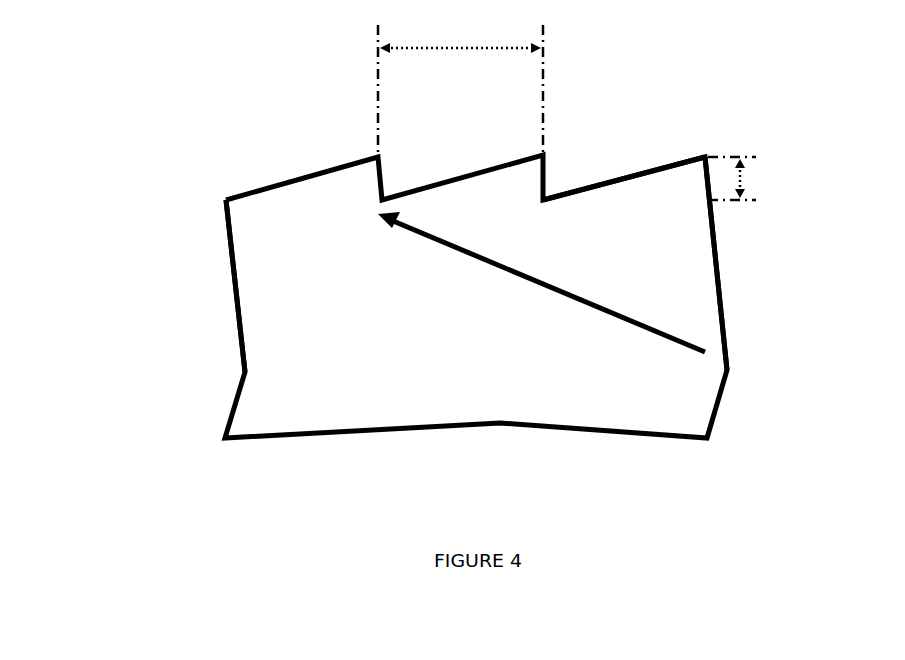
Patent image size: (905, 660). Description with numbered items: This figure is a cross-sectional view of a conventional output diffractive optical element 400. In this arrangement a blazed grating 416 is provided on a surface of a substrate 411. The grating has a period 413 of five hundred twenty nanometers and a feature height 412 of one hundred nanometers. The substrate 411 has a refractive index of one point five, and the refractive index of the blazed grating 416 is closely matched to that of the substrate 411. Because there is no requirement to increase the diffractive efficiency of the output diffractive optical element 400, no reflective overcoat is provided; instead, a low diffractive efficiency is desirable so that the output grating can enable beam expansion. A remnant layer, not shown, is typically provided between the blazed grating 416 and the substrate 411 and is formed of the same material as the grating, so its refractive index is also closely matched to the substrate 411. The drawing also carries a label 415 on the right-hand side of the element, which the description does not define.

The output diffractive optical element 400 is at (166, 302).
The substrate 411 is at (238, 242).
The feature height 412 is at (746, 178).
The period 413 is at (460, 89).
The right side wall 415 is at (684, 332).
The blazed grating 416 is at (598, 204).